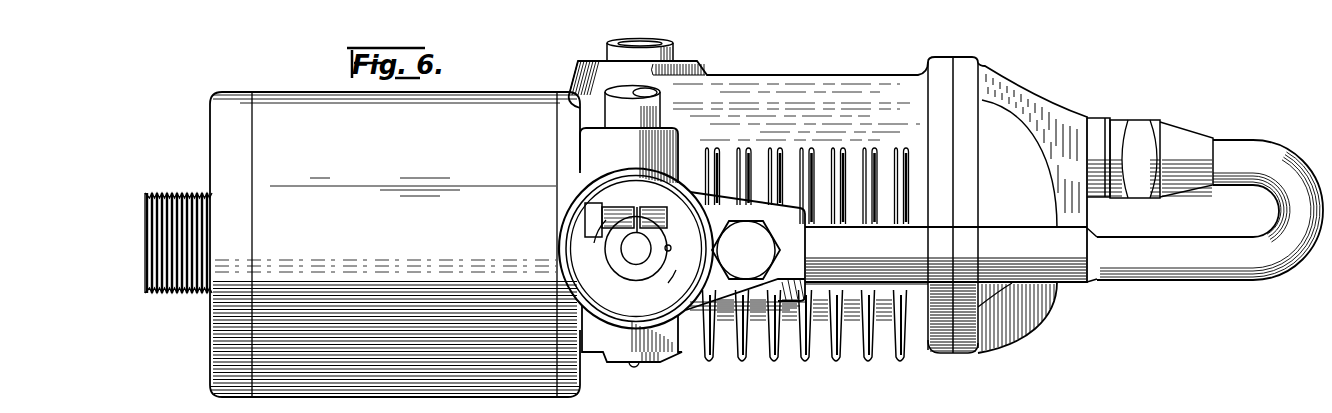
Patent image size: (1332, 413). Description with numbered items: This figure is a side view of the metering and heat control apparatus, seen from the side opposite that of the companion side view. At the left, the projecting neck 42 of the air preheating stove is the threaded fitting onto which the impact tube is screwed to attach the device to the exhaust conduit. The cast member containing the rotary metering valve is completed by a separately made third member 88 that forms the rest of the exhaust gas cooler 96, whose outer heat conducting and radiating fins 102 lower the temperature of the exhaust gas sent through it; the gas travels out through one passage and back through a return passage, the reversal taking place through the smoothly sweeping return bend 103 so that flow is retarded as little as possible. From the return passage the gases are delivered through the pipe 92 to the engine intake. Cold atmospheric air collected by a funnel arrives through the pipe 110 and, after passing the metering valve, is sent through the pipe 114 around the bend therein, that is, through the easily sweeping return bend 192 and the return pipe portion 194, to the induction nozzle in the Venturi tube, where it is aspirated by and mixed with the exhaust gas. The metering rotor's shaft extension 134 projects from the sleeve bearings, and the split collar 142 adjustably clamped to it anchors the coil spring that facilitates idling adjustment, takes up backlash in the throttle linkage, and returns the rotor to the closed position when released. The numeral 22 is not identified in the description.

The casing body 22 is at (530, 397).
The projecting neck 42 is at (172, 294).
The third member 88 is at (1000, 76).
The pipe 92 is at (660, 53).
The cooler 96 is at (885, 347).
The outer heat conducting and radiating fins 102 is at (868, 356).
The return bend 103 is at (1007, 132).
The pipe 110 is at (618, 99).
The pipe 114 is at (1068, 267).
The shaft extension 134 is at (637, 248).
The split collar 142 is at (630, 252).
The return bend 192 is at (1285, 212).
The return pipe portion 194 is at (1196, 122).